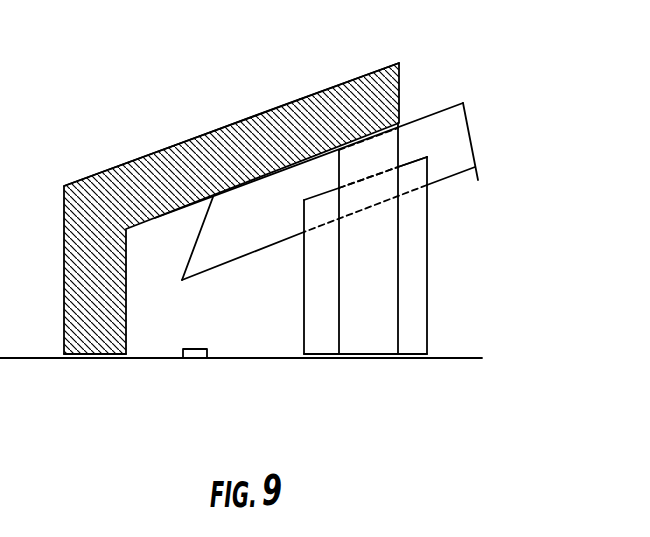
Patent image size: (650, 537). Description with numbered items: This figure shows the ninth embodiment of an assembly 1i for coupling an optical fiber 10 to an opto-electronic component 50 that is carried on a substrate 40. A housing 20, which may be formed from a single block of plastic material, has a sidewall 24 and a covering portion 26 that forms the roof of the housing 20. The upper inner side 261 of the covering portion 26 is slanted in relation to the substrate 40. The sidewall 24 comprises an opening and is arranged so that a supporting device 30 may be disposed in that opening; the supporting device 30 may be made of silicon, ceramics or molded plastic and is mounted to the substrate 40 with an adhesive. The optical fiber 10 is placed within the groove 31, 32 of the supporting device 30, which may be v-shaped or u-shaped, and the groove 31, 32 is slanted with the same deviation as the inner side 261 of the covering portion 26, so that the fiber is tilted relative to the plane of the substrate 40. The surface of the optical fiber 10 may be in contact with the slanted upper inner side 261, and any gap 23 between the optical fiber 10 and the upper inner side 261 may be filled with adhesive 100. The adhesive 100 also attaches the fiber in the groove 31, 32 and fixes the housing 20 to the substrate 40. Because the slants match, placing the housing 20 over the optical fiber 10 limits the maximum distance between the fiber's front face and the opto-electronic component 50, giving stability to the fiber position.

The assembly 1i is at (172, 56).
The housing 20 is at (190, 139).
The covering portion 26 is at (163, 170).
The upper inner side 261 is at (250, 178).
The gap 23 is at (357, 140).
The optical fiber 10 is at (450, 120).
The sidewall 24 is at (382, 265).
The supporting device 30 is at (417, 234).
The groove 31 is at (410, 170).
The groove 32 is at (368, 177).
The adhesive 100 is at (398, 127).
The substrate 40 is at (152, 360).
The opto-electronic component 50 is at (192, 347).